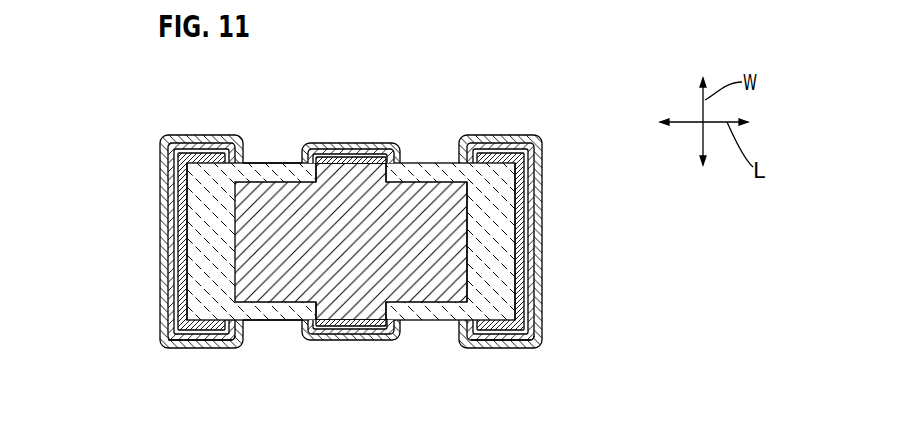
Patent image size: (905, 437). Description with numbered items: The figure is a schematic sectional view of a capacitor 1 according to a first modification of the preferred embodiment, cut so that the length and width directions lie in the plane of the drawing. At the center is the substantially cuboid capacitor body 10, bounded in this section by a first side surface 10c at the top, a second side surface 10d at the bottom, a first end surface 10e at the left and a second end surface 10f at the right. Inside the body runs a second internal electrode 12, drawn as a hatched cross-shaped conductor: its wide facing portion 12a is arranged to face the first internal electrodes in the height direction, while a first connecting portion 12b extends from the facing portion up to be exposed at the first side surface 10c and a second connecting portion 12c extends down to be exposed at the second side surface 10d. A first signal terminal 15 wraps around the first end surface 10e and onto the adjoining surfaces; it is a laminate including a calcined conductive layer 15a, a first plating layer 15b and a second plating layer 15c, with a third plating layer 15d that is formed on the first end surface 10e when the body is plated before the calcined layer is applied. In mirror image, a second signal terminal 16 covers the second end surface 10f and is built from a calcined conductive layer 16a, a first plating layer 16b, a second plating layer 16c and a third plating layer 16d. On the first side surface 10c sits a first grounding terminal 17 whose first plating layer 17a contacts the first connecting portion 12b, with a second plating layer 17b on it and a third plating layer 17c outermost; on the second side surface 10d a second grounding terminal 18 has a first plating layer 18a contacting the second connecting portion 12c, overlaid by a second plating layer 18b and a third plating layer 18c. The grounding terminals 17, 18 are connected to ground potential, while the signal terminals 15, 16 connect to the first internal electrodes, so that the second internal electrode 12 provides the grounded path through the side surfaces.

The electronic component 1 is at (350, 236).
The capacitor body 10 is at (445, 158).
The first side surface 10c is at (262, 163).
The second side surface 10d is at (265, 320).
The first end surface 10e is at (185, 292).
The second end surface 10f is at (520, 298).
The second internal electrode 12 is at (429, 309).
The facing portion 12a is at (470, 287).
The first connecting portion 12b is at (390, 168).
The second connecting portion 12c is at (400, 313).
The first signal terminal 15 is at (155, 257).
The calcined conductive layer 15a is at (178, 167).
The first plating layer 15b is at (170, 185).
The second plating layer 15c is at (160, 210).
The third plating layer 15d is at (173, 314).
The second signal terminal 16 is at (547, 260).
The calcined conductive layer 16a is at (543, 163).
The first plating layer 16b is at (545, 186).
The second plating layer 16c is at (543, 218).
The third plating layer 16d is at (522, 322).
The first grounding terminal 17 is at (400, 140).
The first plating layer 17a is at (328, 158).
The second plating layer 17b is at (347, 156).
The third plating layer 17c is at (372, 158).
The second grounding terminal 18 is at (407, 343).
The first plating layer 18a is at (323, 330).
The second plating layer 18b is at (343, 333).
The third plating layer 18c is at (372, 338).